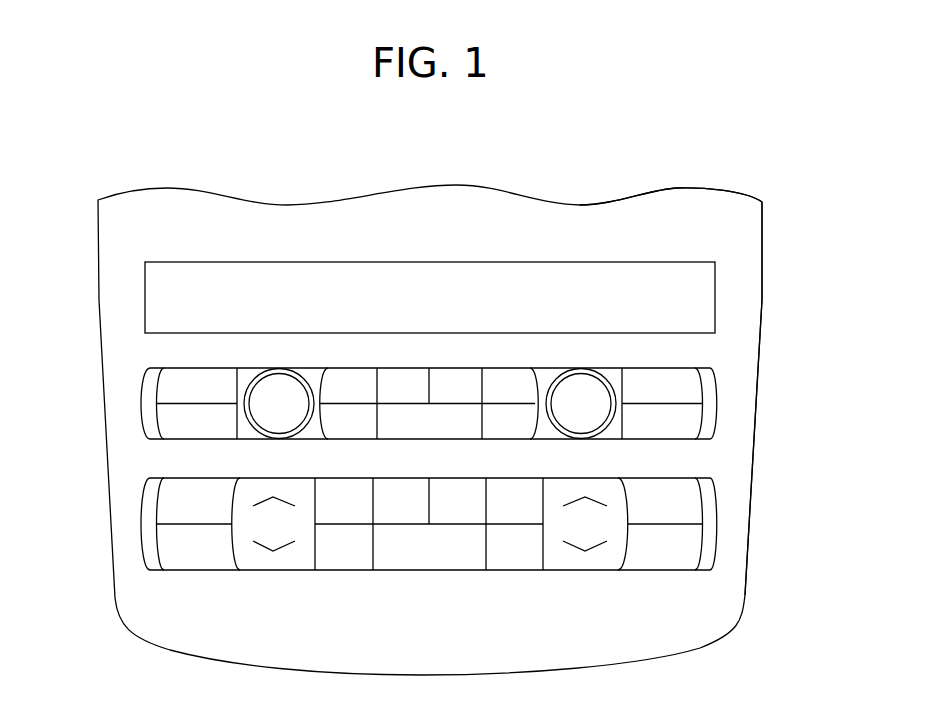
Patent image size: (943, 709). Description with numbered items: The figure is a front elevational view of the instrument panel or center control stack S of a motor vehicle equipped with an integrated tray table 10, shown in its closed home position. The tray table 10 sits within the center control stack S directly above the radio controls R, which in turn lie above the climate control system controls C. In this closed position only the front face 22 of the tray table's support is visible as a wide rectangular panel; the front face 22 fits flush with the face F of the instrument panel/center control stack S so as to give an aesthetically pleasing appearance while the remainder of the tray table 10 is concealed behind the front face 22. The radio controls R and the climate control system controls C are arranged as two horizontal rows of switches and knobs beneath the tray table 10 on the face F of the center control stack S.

The integrated tray table 10 is at (134, 321).
The center control stack S is at (727, 190).
The face F is at (737, 314).
The front face 22 is at (690, 297).
The radio controls R is at (693, 396).
The climate control system controls C is at (697, 517).